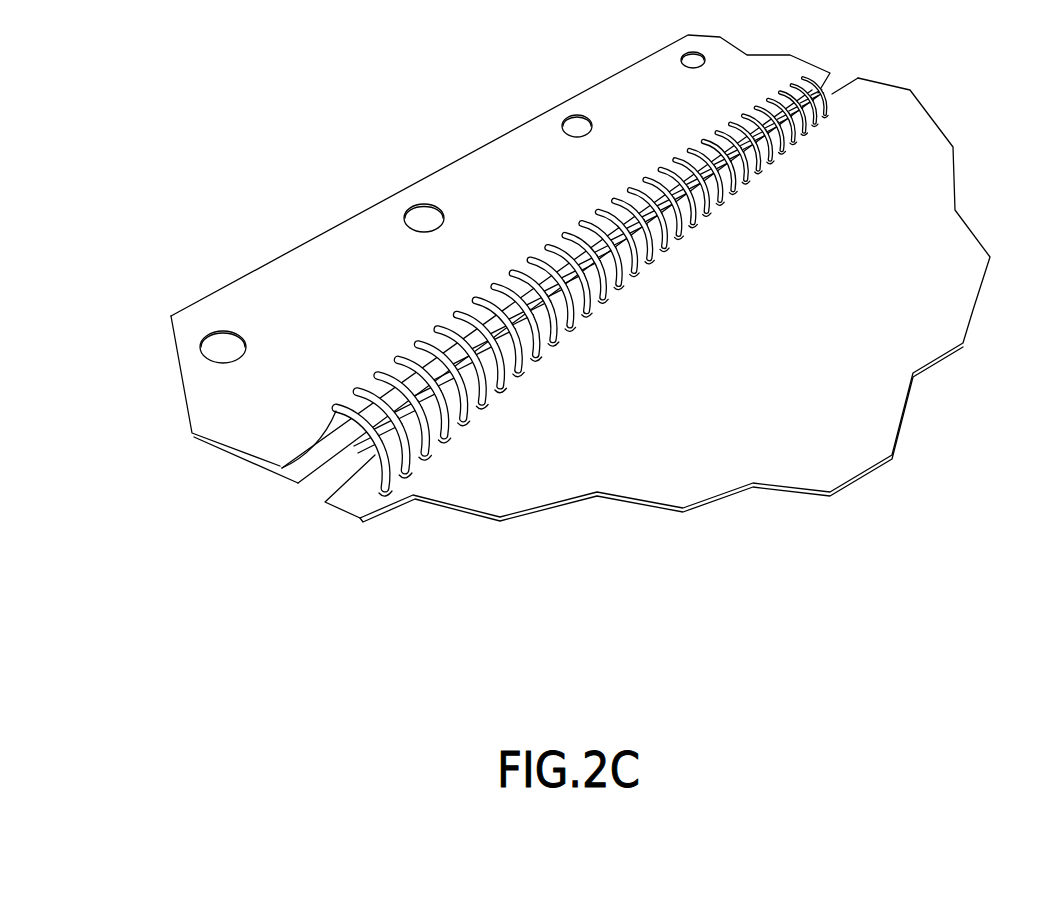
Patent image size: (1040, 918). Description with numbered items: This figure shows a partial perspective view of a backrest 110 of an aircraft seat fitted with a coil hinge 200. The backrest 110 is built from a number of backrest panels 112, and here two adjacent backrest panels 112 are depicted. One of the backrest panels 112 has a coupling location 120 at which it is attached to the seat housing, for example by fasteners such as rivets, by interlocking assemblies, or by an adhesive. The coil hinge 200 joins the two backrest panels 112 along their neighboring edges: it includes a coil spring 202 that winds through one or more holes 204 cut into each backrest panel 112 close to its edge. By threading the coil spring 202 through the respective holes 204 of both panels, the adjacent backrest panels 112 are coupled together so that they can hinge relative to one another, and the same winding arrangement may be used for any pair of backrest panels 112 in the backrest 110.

The backrest 110 is at (591, 294).
The backrest panel 112 is at (628, 80).
The coupling location 120 is at (276, 222).
The coil hinge 200 is at (558, 300).
The coil spring 202 is at (827, 102).
The holes 204 is at (277, 467).